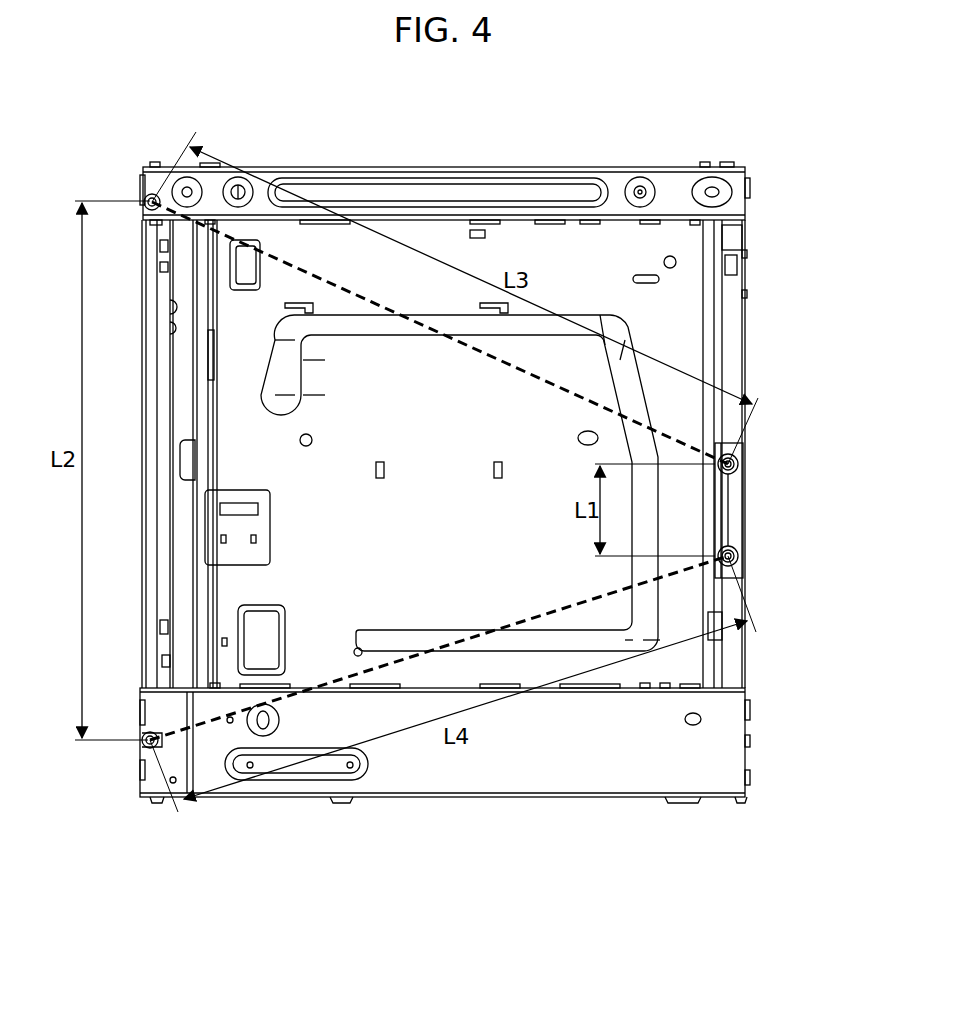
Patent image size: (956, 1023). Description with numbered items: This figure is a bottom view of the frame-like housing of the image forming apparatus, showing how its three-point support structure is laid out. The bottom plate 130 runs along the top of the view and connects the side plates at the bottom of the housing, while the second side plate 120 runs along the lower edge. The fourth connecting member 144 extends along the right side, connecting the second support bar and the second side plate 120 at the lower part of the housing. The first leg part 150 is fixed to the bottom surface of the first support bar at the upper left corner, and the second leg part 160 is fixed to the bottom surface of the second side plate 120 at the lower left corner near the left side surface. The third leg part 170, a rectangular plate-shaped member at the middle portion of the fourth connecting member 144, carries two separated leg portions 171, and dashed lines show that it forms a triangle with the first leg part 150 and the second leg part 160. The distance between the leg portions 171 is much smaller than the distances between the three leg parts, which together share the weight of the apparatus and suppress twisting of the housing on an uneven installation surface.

The second side plate 120 is at (530, 757).
The bottom plate 130 is at (608, 250).
The fourth connecting member 144 is at (733, 355).
The first leg part 150 is at (146, 196).
The second leg part 160 is at (142, 750).
The third leg part 170 is at (738, 524).
The leg portions 171 is at (740, 462).